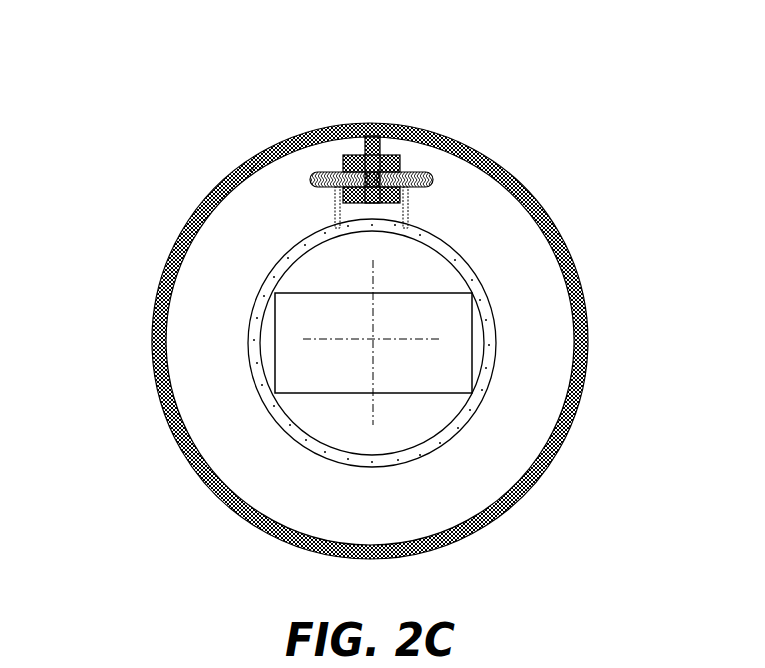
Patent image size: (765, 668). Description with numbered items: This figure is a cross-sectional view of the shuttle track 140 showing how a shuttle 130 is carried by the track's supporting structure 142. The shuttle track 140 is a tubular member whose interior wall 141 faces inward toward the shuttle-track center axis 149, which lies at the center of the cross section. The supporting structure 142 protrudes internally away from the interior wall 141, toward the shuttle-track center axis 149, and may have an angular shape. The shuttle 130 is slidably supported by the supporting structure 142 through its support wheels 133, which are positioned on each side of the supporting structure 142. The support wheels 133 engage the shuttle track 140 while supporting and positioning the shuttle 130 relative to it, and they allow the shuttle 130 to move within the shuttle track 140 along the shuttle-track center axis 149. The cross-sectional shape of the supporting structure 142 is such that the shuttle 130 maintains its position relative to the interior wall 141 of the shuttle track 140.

The shuttle track 140 is at (177, 240).
The interior wall 141 is at (263, 168).
The supporting structure 142 is at (392, 155).
The support wheels 133 is at (430, 172).
The shuttle 130 is at (247, 342).
The shuttle-track center axis 149 is at (374, 338).